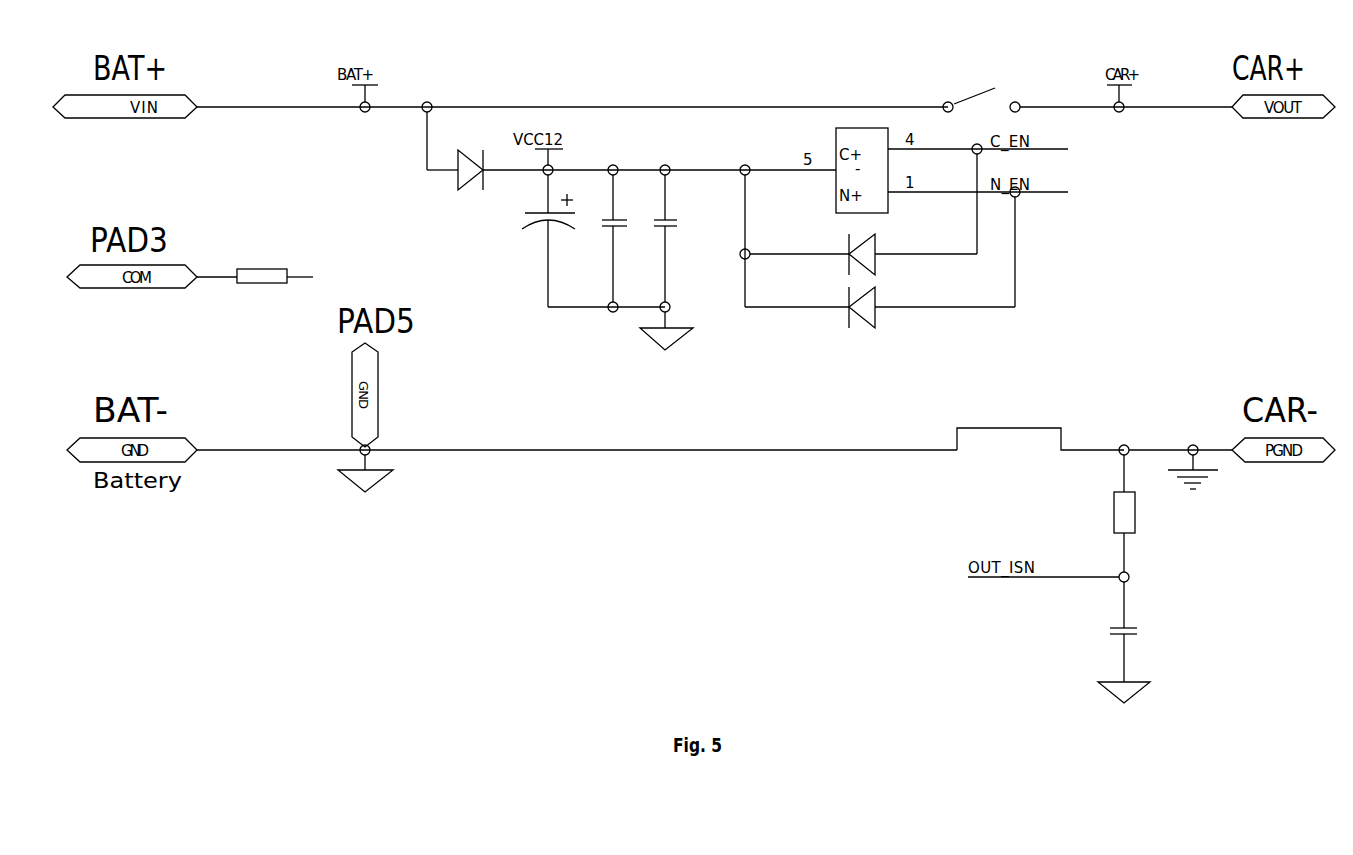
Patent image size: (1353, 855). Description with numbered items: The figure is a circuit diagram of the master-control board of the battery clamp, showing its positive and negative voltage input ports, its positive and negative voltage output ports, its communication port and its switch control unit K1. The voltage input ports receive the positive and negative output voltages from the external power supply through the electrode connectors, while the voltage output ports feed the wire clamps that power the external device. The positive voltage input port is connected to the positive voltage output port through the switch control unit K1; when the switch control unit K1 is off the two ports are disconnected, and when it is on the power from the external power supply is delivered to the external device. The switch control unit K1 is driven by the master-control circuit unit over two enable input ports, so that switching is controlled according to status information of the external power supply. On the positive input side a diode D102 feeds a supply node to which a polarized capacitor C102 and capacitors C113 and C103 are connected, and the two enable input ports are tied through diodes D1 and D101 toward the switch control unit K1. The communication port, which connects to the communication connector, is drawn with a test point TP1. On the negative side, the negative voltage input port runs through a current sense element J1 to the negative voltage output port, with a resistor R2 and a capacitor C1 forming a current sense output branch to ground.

The diode D102 is at (460, 181).
The polarized capacitor C102 is at (535, 241).
The capacitor C113 is at (607, 238).
The capacitor C103 is at (658, 238).
The switch control unit K1 is at (981, 91).
The Schottky diode SS34 D1 is at (863, 214).
The Schottky diode SS34 D101 is at (880, 262).
The test point RTC TP1 is at (265, 277).
The current sense connector J1 is at (1023, 438).
The resistor R2 is at (1135, 513).
The capacitor C1 is at (1132, 632).